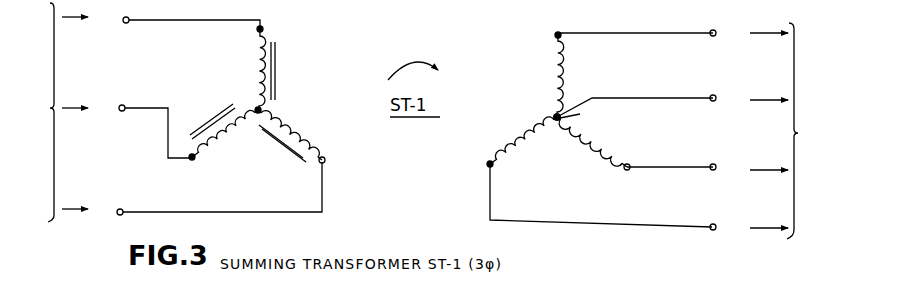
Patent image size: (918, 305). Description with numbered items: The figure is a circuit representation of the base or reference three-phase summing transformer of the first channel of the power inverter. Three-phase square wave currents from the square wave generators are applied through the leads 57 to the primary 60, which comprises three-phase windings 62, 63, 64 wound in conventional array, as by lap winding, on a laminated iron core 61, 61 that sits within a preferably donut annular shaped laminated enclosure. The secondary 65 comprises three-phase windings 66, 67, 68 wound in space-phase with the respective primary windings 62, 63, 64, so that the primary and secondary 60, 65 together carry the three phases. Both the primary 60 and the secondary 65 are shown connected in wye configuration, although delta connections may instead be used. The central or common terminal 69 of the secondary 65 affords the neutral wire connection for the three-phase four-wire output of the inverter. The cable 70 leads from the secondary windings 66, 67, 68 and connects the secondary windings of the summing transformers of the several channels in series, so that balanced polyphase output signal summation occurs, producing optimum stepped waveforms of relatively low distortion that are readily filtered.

The leads 57 is at (76, 115).
The primary 60 is at (268, 174).
The laminated iron core 61 is at (278, 68).
The primary winding 62 is at (257, 67).
The primary winding 63 is at (207, 147).
The primary winding 64 is at (292, 137).
The secondary 65 is at (578, 179).
The secondary winding 66 is at (556, 85).
The secondary winding 67 is at (514, 138).
The secondary winding 68 is at (606, 148).
The central or common terminal 69 is at (559, 116).
The cable 70 is at (772, 131).